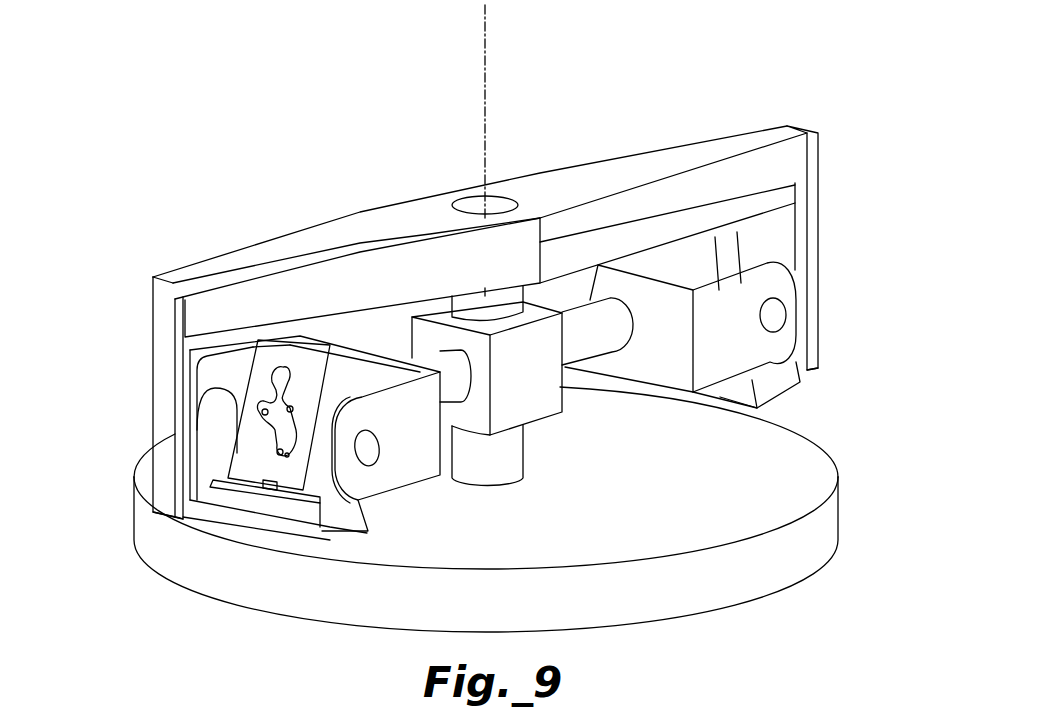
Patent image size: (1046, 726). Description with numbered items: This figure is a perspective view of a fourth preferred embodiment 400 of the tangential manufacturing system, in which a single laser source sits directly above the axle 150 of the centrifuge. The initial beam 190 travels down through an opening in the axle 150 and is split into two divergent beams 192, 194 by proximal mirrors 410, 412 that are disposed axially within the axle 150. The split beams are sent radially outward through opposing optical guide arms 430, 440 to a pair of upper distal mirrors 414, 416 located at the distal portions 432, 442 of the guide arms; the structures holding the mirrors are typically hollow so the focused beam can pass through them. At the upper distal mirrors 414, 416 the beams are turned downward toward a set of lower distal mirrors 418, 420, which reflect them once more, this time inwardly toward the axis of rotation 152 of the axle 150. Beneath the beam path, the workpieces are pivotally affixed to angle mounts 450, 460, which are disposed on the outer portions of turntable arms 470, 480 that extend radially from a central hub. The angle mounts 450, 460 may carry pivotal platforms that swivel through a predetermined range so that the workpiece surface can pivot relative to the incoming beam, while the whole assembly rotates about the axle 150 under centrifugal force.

The fourth preferred embodiment 400 is at (656, 64).
The distal portion of optical guide arm 442 is at (462, 298).
The upper distal mirror 414 is at (111, 366).
The upper distal mirror 416 is at (797, 183).
The distal portion of optical guide arm 432 is at (156, 249).
The divergent beam 192 is at (642, 215).
The divergent beam 194 is at (255, 258).
The lower distal mirror 420 is at (801, 283).
The optical guide arm 430 is at (480, 202).
The optical guide arm 440 is at (540, 192).
The proximal mirror 412 is at (486, 254).
The proximal mirror 410 is at (484, 222).
The initial beam 190 is at (487, 80).
The turntable arm 470 is at (453, 380).
The turntable arm 480 is at (580, 347).
The axle 150 is at (493, 467).
The axis of rotation 152 is at (478, 413).
The angle mount 450 is at (375, 473).
The lower distal mirror 418 is at (253, 430).
The angle mount 460 is at (725, 353).